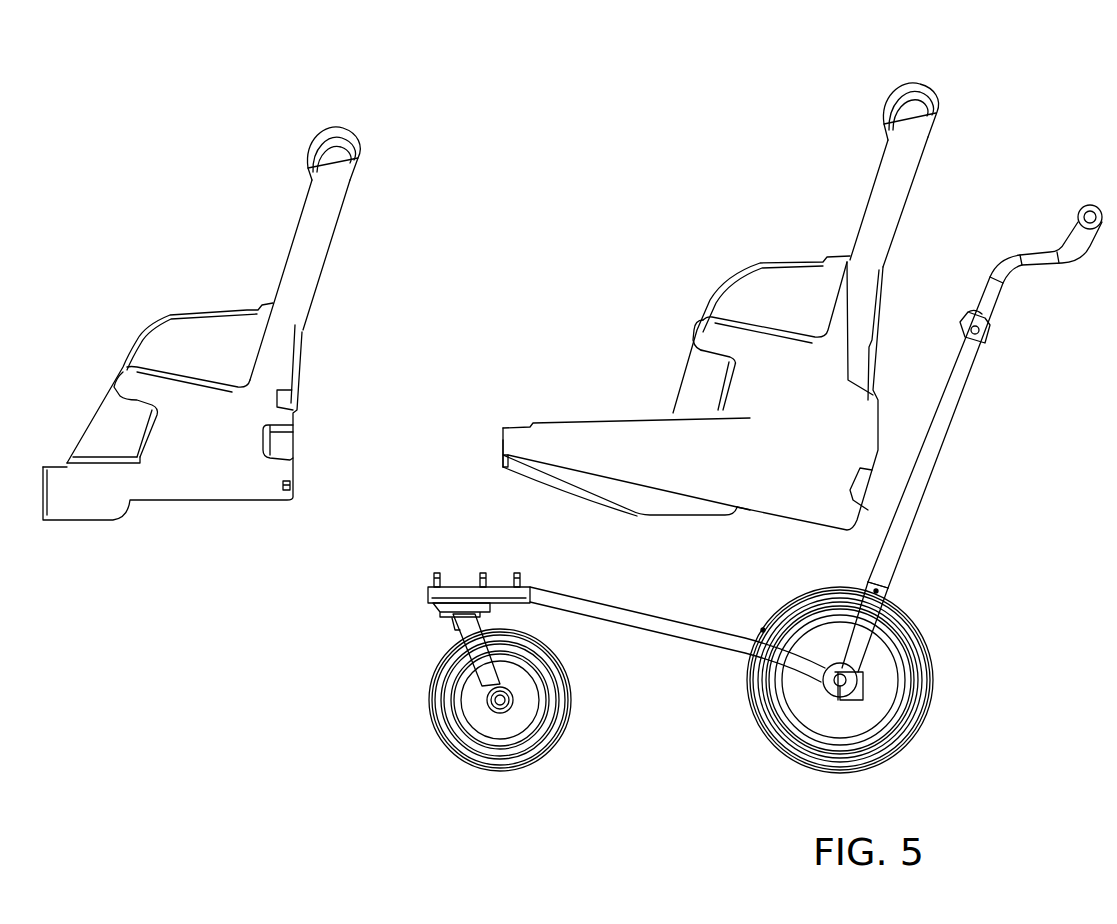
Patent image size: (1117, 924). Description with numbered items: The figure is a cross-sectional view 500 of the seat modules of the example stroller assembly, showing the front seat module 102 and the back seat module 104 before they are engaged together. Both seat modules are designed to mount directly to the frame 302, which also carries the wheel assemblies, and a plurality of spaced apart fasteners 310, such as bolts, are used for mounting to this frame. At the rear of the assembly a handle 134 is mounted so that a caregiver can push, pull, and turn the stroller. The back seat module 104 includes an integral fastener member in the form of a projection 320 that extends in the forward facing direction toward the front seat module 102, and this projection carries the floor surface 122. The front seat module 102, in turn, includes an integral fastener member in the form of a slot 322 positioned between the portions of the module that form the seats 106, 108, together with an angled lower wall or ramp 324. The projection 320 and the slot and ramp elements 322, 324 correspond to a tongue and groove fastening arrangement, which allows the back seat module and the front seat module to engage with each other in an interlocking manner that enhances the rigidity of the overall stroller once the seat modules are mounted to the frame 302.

The cross-sectional view 500 is at (988, 70).
The front seat module 102 is at (333, 131).
The back seat module 104 is at (908, 85).
The seat 106 is at (250, 412).
The seat 108 is at (250, 412).
The floor surface 122 is at (606, 403).
The handle 134 is at (1090, 206).
The frame 302 is at (664, 630).
The fasteners 310 is at (508, 568).
The projection 320 is at (495, 443).
The slot 322 is at (312, 446).
The angled lower wall/ramp 324 is at (295, 455).